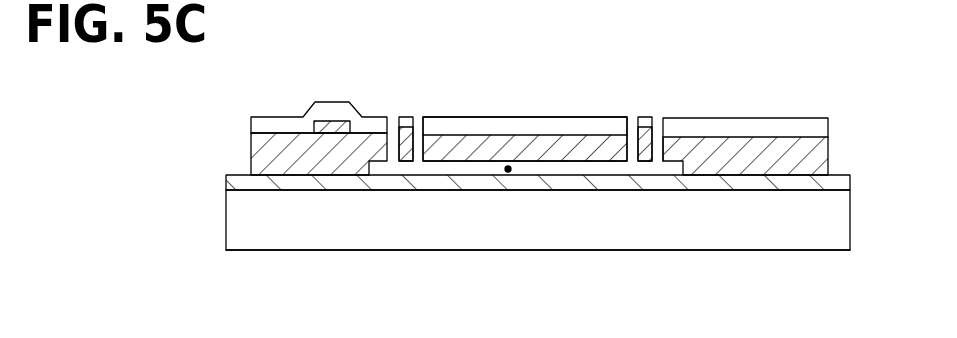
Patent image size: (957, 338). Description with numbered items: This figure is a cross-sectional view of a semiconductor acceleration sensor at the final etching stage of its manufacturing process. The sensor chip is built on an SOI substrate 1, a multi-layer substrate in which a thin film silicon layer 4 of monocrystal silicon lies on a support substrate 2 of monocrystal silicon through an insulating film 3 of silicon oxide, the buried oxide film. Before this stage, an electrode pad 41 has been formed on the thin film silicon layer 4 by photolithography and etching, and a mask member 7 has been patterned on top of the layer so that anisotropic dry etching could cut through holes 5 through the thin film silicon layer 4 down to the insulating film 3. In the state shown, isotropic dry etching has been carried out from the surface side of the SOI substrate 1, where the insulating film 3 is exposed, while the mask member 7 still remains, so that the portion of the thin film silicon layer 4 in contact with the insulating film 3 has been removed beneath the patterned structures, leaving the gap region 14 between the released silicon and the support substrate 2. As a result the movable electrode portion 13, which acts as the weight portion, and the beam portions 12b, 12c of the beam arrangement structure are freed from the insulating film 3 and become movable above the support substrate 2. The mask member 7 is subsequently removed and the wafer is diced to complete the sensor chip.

The SOI substrate 1 is at (766, 251).
The support substrate 2 is at (808, 251).
The insulating film 3 is at (851, 182).
The thin film silicon layer 4 is at (828, 161).
The through hole 5 is at (392, 128).
The mask member 7 is at (786, 118).
The beam portion 12b is at (644, 117).
The beam portion 12c is at (406, 117).
The movable electrode portion 13 is at (512, 122).
The lower electrode (24) 14 is at (508, 169).
The electrode pad 41 is at (334, 112).